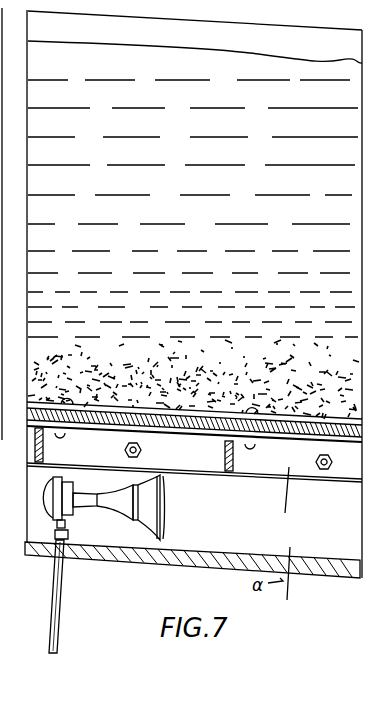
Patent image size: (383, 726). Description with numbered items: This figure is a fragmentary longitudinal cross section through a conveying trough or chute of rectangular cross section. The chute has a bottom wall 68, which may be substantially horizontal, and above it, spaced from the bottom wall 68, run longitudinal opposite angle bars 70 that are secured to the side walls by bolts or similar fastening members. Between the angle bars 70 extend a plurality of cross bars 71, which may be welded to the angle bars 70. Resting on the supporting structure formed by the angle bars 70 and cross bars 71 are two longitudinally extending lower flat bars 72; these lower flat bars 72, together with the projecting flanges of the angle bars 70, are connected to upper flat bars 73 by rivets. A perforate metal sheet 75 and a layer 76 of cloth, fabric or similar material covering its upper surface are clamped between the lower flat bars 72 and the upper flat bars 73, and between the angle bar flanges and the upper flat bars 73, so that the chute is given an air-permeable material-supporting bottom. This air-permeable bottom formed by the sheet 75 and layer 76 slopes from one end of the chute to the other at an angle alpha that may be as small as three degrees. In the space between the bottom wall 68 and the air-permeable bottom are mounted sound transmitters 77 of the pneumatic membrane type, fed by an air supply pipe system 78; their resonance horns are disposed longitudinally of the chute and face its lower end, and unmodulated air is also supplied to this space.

The bottom wall 68 is at (190, 565).
The angle bars 70 is at (274, 533).
The cross bars 71 is at (45, 445).
The lower flat bars 72 is at (343, 443).
The upper flat bars 73 is at (202, 427).
The perforate metal sheet 75 is at (280, 437).
The layer of cloth 76 is at (110, 426).
The sound transmitters 77 is at (163, 516).
The air supply pipe system 78 is at (63, 600).